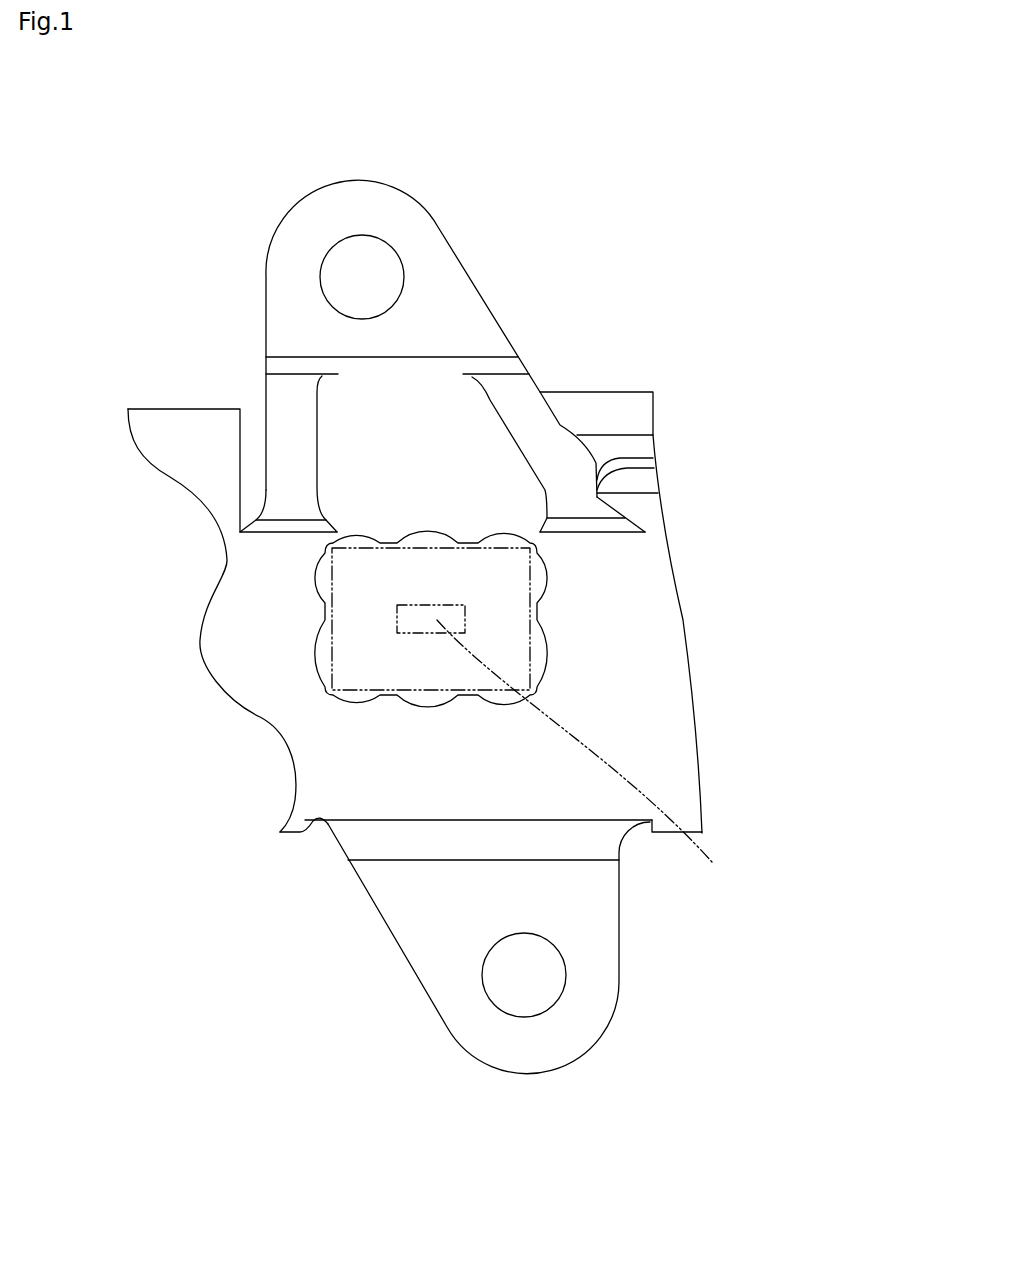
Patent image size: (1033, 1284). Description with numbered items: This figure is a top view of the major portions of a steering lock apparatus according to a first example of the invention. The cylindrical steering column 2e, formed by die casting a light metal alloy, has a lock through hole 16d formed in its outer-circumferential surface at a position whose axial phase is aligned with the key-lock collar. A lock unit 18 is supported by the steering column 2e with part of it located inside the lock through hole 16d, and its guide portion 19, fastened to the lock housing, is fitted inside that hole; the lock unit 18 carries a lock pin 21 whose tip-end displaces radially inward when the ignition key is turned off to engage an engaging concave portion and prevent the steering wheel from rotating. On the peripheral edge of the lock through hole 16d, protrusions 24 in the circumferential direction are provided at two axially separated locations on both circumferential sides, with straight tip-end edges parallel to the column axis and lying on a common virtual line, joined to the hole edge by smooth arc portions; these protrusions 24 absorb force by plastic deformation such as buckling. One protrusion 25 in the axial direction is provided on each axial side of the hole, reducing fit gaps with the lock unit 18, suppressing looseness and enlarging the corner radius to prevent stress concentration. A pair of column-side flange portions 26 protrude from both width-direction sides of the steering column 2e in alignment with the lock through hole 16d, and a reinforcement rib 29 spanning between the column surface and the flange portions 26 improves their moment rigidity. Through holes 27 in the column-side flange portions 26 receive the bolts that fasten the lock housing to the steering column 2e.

The steering column 2e is at (315, 804).
The column-side flange portions 26 is at (432, 265).
The through holes 27 is at (326, 257).
The reinforcement rib 29 is at (290, 412).
The lock through hole 16d is at (350, 533).
The protrusions in the circumferential direction 24 is at (397, 540).
The protrusions in the axial direction 25 is at (322, 618).
The guide portion 19 is at (362, 657).
The lock unit 18 is at (497, 668).
The lock pin 21 is at (579, 754).